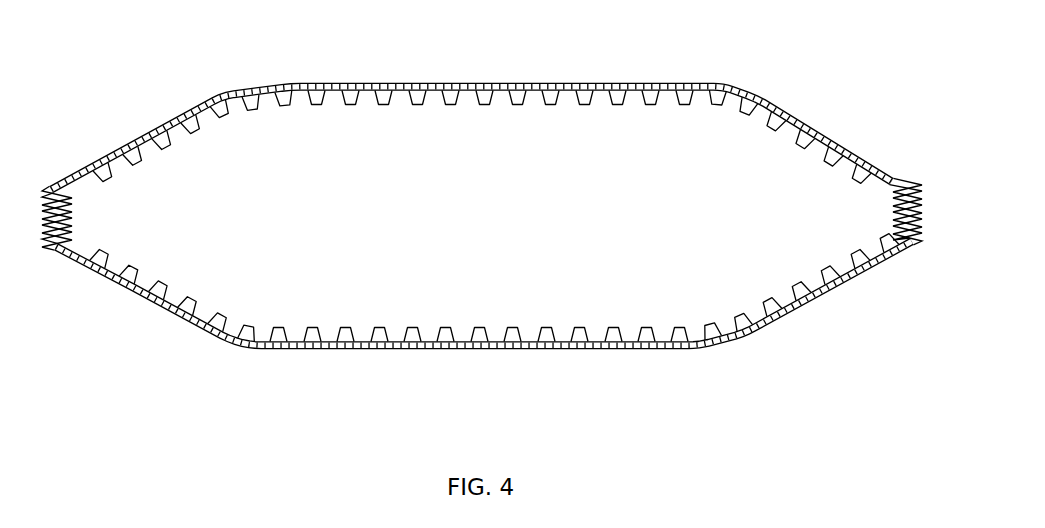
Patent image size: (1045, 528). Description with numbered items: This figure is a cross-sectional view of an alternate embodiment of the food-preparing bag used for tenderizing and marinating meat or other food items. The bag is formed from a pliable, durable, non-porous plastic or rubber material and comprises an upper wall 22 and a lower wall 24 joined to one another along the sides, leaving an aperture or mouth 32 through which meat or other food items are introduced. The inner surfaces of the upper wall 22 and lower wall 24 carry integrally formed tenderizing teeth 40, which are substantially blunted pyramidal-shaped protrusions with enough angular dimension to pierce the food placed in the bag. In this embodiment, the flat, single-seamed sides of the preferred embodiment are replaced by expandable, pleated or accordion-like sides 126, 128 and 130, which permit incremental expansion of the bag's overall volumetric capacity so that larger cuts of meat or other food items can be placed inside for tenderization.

The upper wall 22 is at (630, 82).
The lower wall 24 is at (557, 350).
The mouth 32 is at (205, 296).
The tenderizing teeth 40 is at (450, 322).
The expandable pleated side 126 is at (45, 203).
The expandable pleated side 128 is at (137, 127).
The expandable pleated side 130 is at (923, 232).